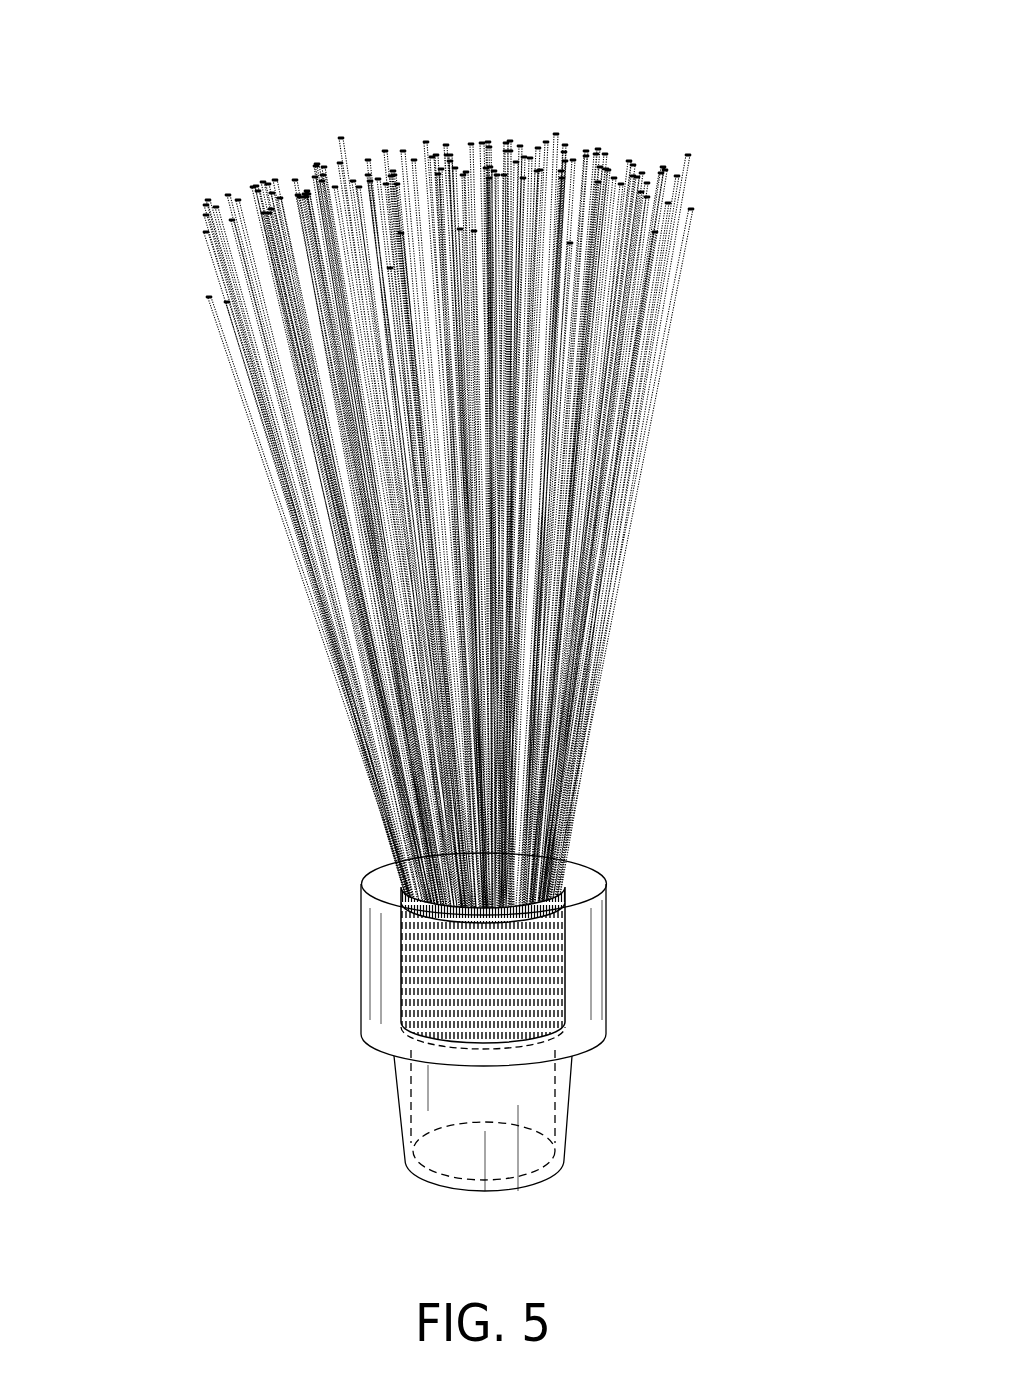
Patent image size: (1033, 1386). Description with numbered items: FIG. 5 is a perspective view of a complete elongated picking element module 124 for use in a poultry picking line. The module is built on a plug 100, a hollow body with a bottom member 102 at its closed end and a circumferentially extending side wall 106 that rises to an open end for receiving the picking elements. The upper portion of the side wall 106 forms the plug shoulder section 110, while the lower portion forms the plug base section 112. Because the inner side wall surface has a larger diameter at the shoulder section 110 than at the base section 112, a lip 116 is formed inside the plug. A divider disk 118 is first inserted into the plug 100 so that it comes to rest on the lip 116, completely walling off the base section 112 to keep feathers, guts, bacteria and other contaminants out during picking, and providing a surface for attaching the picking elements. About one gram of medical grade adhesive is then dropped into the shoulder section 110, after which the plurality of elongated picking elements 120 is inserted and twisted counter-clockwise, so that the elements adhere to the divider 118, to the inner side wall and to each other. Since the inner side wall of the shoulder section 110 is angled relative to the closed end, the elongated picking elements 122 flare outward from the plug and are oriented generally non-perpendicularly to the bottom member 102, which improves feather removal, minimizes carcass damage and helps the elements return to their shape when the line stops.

The plug 100 is at (653, 867).
The bottom member 102 is at (525, 1180).
The side wall 106 is at (590, 940).
The plug shoulder section 110 is at (345, 975).
The plug base section 112 is at (377, 1108).
The lip 116 is at (522, 1038).
The divider disk 118 is at (547, 1020).
The plurality of elongated picking elements 120 is at (642, 408).
The elongated picking element 122 is at (333, 128).
The elongated picking element module 124 is at (158, 128).